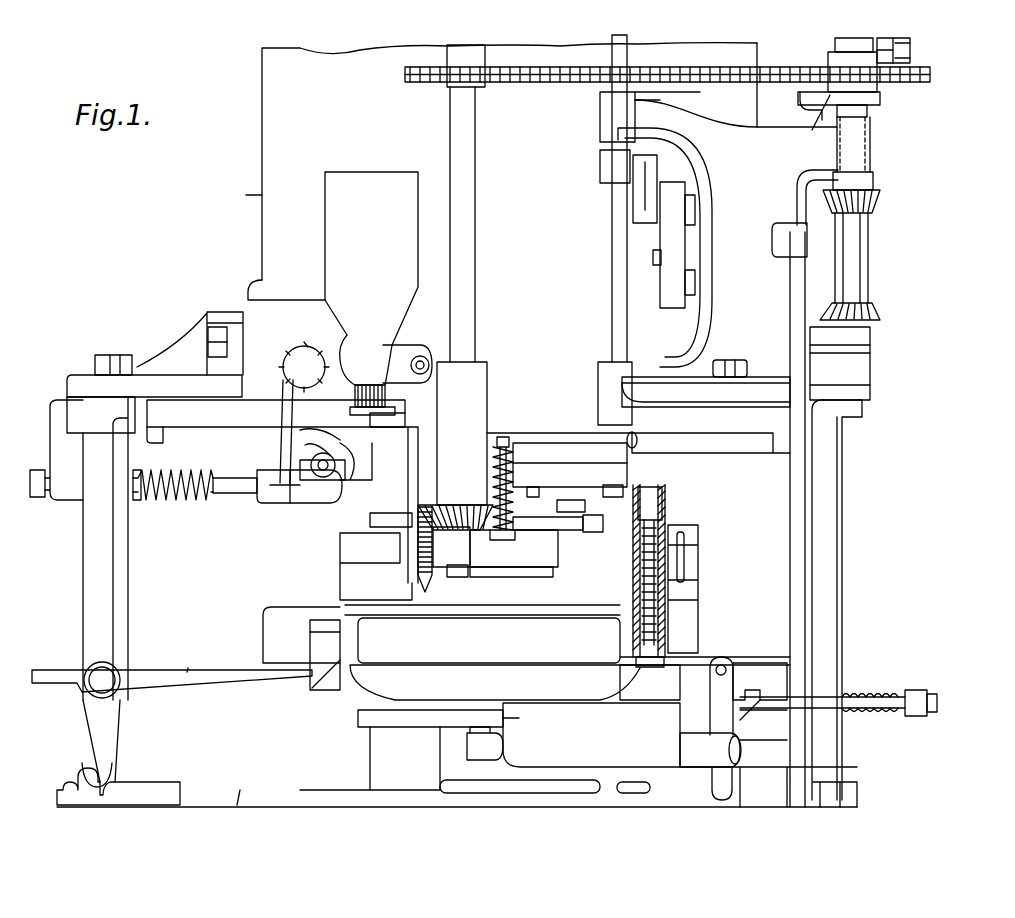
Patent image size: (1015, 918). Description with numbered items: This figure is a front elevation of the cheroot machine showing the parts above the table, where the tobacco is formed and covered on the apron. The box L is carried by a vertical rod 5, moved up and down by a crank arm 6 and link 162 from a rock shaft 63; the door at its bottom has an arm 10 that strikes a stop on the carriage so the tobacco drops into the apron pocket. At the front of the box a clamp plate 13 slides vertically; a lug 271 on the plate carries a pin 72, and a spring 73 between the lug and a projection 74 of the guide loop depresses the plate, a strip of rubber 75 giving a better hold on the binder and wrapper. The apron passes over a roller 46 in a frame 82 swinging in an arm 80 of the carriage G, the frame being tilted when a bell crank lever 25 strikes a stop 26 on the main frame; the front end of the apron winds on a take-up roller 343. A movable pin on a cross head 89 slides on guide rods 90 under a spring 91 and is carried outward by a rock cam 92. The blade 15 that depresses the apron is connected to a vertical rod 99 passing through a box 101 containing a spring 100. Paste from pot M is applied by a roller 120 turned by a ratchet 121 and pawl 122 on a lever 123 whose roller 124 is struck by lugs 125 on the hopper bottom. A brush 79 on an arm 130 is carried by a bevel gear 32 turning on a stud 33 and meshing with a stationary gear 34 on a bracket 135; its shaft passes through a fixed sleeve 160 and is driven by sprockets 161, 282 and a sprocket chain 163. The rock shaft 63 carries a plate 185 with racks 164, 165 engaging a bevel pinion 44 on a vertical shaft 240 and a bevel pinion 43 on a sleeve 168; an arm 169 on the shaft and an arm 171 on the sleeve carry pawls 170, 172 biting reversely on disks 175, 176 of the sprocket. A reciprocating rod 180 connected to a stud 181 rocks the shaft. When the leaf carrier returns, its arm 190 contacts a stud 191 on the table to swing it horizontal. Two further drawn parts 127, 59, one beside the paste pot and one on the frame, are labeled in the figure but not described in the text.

The sprocket 282 is at (410, 68).
The fixed sleeve 160 is at (476, 348).
The roller 120 is at (405, 392).
The bracket 135 is at (463, 440).
The feed roller 127 is at (425, 352).
The arm 130 is at (360, 465).
The brush 79 is at (392, 412).
The pawl 122 is at (278, 416).
The ratchet 121 is at (304, 401).
The lugs 125 is at (322, 443).
The lever 123 is at (312, 505).
The roller 124 is at (300, 460).
The arm 190 is at (110, 716).
The stud 191 is at (98, 780).
The arm 80 is at (280, 607).
The roller 46 is at (322, 692).
The frame 82 is at (312, 685).
The blade 15 is at (489, 640).
The bevel gear 32 is at (422, 595).
The stationary gear 34 is at (455, 505).
The clamp plate 13 is at (505, 563).
The lug 271 is at (508, 530).
The strip of rubber 75 is at (550, 575).
The stud 33 is at (342, 560).
The spring 73 is at (514, 500).
The pin 72 is at (508, 440).
The projection 74 is at (540, 445).
The arm 10 is at (593, 532).
The vertical rod 5 is at (612, 308).
The sprocket chain 163 is at (590, 92).
The arm 171 is at (790, 102).
The link 162 is at (680, 170).
The rock shaft 63 is at (653, 257).
The crank arm 6 is at (677, 245).
The frame plate 59 is at (706, 394).
The box 101 is at (665, 495).
The spring 100 is at (668, 553).
The vertical rod 99 is at (700, 630).
The rock cam 92 is at (767, 665).
The stop 26 is at (760, 775).
The spring 91 is at (822, 688).
The guide rods 90 is at (908, 716).
The cross head 89 is at (815, 727).
The take-up roller 343 is at (680, 750).
The bell crank lever 25 is at (712, 778).
The reciprocating rod 180 is at (790, 502).
The stud 181 is at (777, 242).
The rack 164 is at (797, 200).
The rack 165 is at (820, 306).
The bevel pinion 43 is at (882, 200).
The bevel pinion 44 is at (882, 316).
The plate 185 is at (862, 262).
The vertical shaft 240 is at (869, 232).
The pawl 172 is at (818, 122).
The sleeve 168 is at (868, 112).
The disk 176 is at (882, 100).
The arm 169 is at (840, 60).
The pawl 170 is at (912, 55).
The sprocket 161 is at (932, 76).
The disk 175 is at (757, 72).